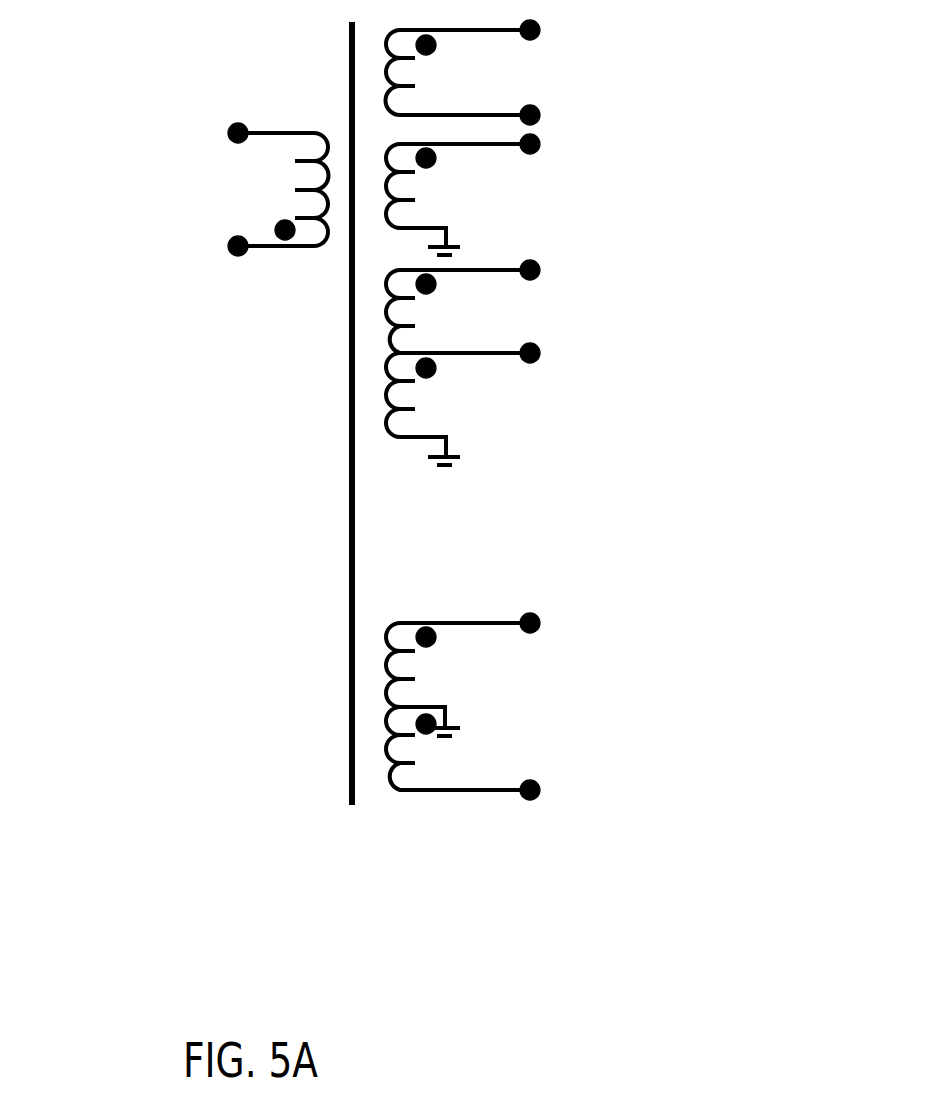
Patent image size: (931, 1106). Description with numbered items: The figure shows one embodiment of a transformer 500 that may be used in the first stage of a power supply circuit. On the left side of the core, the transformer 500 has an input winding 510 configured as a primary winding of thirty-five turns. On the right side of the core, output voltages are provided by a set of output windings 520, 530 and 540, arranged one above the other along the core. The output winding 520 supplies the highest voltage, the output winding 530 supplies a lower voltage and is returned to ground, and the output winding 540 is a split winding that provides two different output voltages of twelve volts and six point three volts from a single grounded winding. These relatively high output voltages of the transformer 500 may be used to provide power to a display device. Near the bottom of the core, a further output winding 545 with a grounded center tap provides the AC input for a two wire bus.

The transformer 500 is at (308, 815).
The input winding 510 is at (247, 193).
The output winding 520 is at (505, 83).
The output winding 530 is at (503, 210).
The output winding 540 is at (505, 402).
The output winding 545 is at (503, 700).